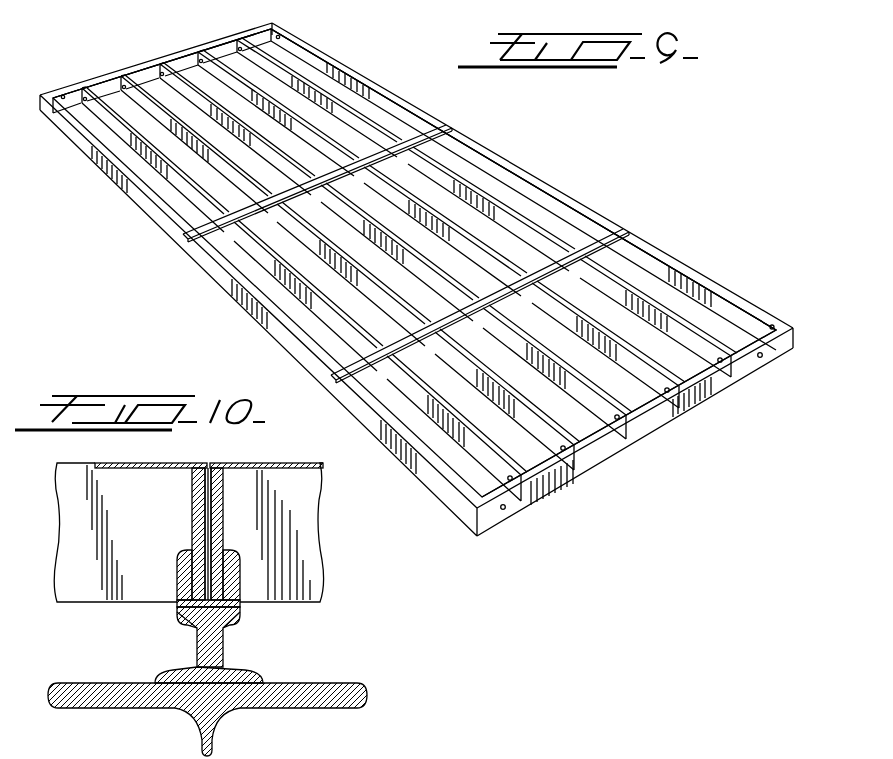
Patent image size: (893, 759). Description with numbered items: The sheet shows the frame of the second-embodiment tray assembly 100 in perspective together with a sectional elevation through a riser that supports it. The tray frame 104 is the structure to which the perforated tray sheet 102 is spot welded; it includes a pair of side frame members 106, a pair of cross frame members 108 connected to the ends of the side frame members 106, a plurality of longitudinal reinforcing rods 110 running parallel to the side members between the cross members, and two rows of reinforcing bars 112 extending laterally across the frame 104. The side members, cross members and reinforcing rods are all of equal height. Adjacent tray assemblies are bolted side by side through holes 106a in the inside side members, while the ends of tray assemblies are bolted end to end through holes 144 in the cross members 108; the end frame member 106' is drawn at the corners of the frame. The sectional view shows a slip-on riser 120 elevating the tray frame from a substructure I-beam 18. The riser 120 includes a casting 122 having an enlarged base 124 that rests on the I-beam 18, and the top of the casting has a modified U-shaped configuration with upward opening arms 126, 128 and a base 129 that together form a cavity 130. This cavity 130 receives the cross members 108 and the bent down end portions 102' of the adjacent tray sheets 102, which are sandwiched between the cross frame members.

In FIG. 9, the tray assembly 100 is at (505, 153).
In FIG. 9, the tray frame 104 is at (370, 82).
In FIG. 9, the side frame member 106 is at (575, 381).
In FIG. 9, the frame end rail 106' is at (405, 284).
In FIG. 9, the hole 106a is at (533, 188).
In FIG. 9, the cross frame member 108 is at (128, 68).
In FIG. 10, the cross frame member 108 is at (200, 497).
In FIG. 9, the longitudinal reinforcing rod 110 is at (322, 310).
In FIG. 10, the longitudinal reinforcing rod 110 is at (300, 533).
In FIG. 9, the reinforcing bar 112 is at (210, 237).
In FIG. 9, the hole 144 is at (63, 97).
In FIG. 10, the perforated tray sheet 102 is at (209, 449).
In FIG. 10, the bent down end portion 102' is at (218, 534).
In FIG. 10, the upward opening arm 128 is at (180, 575).
In FIG. 10, the upward opening arm 126 is at (242, 563).
In FIG. 10, the base 129 is at (185, 613).
In FIG. 10, the cavity 130 is at (240, 612).
In FIG. 10, the slip-on riser 120 is at (190, 630).
In FIG. 10, the casting 122 is at (225, 632).
In FIG. 10, the enlarged base 124 is at (250, 672).
In FIG. 10, the substructure I-beam 18 is at (245, 700).